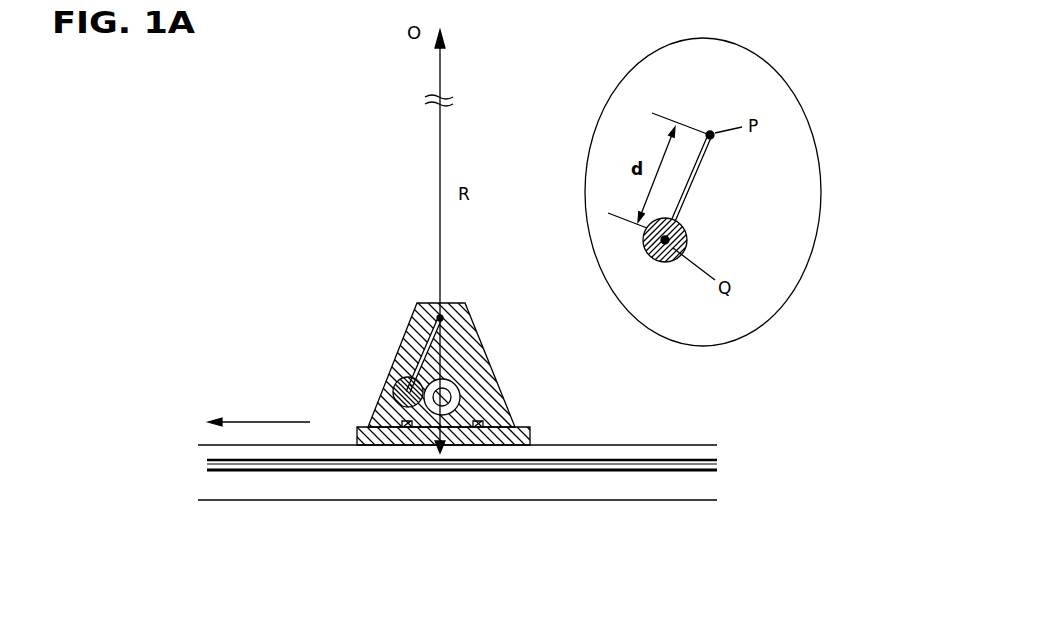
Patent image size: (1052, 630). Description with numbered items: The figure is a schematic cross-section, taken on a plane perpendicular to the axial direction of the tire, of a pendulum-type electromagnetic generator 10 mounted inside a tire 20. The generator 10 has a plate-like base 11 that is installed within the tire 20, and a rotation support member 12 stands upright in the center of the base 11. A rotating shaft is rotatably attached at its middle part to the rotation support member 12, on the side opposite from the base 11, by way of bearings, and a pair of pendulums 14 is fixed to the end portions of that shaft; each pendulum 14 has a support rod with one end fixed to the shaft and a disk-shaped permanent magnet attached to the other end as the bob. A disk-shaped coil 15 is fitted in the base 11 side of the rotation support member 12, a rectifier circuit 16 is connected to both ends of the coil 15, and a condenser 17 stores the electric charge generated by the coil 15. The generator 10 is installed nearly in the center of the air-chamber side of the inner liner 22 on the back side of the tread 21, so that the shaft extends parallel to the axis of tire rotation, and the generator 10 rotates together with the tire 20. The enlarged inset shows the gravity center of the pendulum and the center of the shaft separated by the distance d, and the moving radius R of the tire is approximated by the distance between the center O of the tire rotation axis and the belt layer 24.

The pendulum-type electromagnetic generator 10 is at (422, 347).
The plate-like base 11 is at (525, 430).
The rotation support member 12 is at (475, 340).
The pendulum 14 is at (341, 362).
The disk-shaped coil 15 is at (460, 392).
The rectifier circuit 16 is at (407, 428).
The condenser 17 is at (478, 428).
The tire 20 is at (518, 494).
The tread 21 is at (636, 488).
The inner liner 22 is at (658, 444).
The belt layer 24 is at (712, 460).